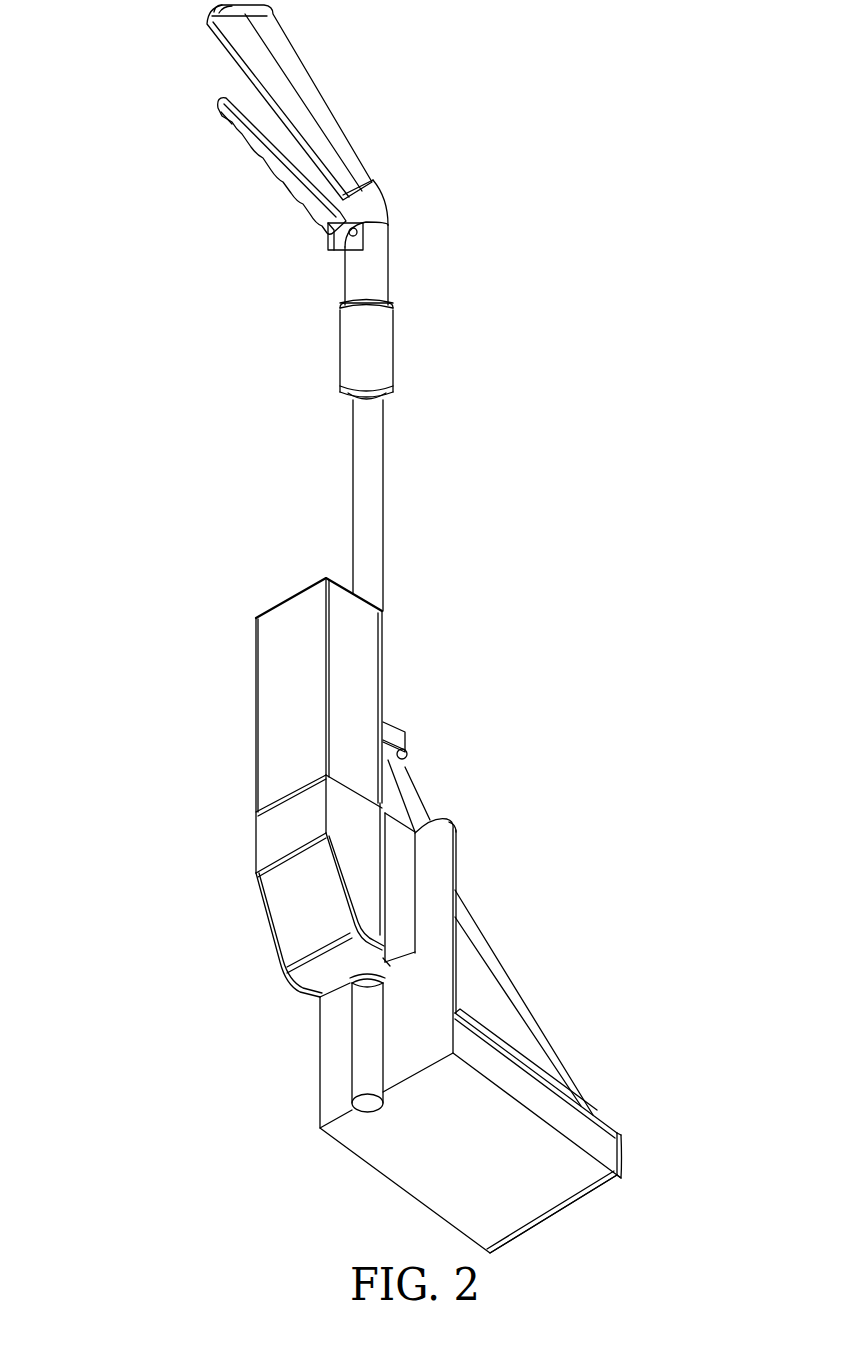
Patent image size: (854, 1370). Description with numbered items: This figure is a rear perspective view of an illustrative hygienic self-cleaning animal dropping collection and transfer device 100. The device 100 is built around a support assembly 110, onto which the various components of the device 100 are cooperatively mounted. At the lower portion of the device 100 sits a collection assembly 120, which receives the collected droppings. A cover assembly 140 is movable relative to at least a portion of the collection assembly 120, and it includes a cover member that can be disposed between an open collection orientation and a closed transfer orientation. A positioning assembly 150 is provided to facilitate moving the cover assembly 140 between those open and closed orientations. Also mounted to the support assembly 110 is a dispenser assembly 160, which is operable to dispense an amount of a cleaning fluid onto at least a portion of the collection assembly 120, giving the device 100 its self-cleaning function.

The hygienic self-cleaning animal dropping collection and transfer device 100 is at (512, 102).
The support assembly 110 is at (443, 430).
The collection assembly 120 is at (572, 1228).
The cover assembly 140 is at (618, 1108).
The positioning assembly 150 is at (523, 950).
The dispenser assembly 160 is at (200, 793).